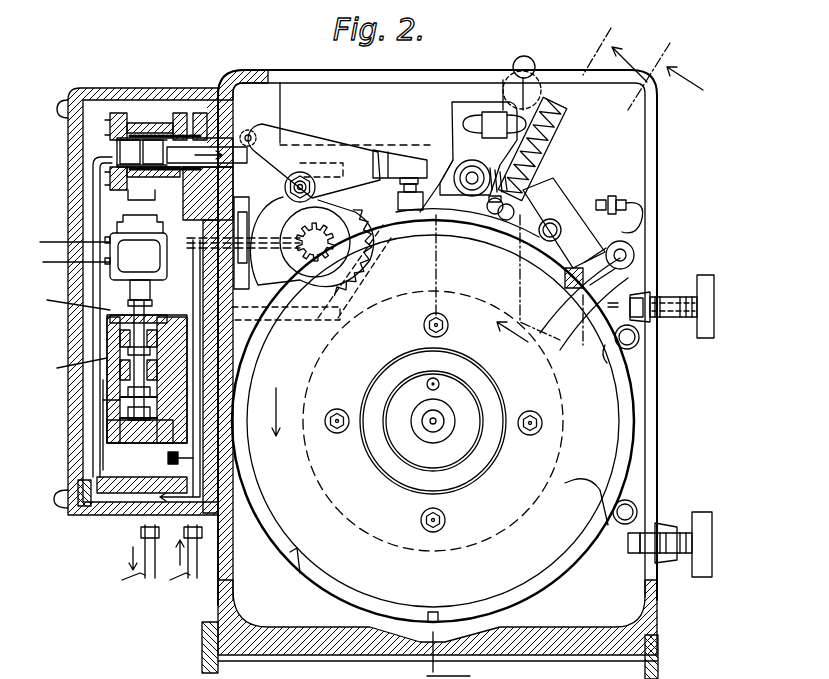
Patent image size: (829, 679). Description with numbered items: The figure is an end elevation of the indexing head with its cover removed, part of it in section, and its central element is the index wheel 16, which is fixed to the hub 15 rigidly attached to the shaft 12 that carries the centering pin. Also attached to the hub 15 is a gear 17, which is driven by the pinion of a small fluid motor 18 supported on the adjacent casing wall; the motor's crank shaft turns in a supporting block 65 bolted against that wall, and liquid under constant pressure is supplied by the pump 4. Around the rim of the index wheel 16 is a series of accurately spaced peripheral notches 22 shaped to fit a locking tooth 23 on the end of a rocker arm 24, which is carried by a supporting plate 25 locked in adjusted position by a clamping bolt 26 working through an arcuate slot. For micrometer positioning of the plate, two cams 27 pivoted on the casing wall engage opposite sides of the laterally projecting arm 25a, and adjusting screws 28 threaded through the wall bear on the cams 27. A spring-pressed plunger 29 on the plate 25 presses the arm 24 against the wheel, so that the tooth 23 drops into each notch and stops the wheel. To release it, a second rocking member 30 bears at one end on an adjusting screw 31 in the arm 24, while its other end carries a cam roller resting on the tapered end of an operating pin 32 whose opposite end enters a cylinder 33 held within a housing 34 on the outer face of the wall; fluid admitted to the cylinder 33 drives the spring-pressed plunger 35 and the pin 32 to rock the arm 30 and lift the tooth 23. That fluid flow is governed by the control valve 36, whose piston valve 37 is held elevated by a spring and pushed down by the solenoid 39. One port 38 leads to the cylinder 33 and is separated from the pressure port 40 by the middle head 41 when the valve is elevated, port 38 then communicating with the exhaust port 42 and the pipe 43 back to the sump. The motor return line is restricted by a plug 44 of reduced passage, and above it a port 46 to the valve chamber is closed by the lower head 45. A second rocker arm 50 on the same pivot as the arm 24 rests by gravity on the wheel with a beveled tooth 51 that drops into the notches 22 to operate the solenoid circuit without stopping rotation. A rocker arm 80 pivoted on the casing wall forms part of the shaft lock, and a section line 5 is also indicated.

The pump 4 is at (572, 192).
The section line 5- 5 is at (665, 76).
The shaft 12 is at (455, 419).
The hub 15 is at (405, 357).
The indexing wheel 16 is at (263, 343).
The gear 17 is at (367, 230).
The fluid motor 18 is at (280, 300).
The peripheral notches 22 is at (432, 240).
The locking tooth 23 is at (572, 282).
The rocker arm 24 is at (517, 240).
The supporting plate 25 is at (452, 110).
The laterally projecting arm 25a is at (607, 363).
The clamping bolt 26 is at (520, 60).
The cams 27 is at (633, 290).
The adjusting screws 28 is at (713, 290).
The spring-pressed plunger 29 is at (553, 163).
The rocking member 30 is at (327, 147).
The adjusting screw 31 is at (378, 152).
The operating pin 32 is at (190, 132).
The cylinder 33 is at (147, 130).
The housing 34 is at (110, 90).
The plunger 35 is at (136, 183).
The control valve 36 is at (107, 370).
The piston valve 37 is at (66, 300).
The port 38 is at (107, 385).
The solenoid 39 is at (133, 258).
The pressure port 40 is at (160, 282).
The middle head 41 is at (120, 397).
The exhaust port 42 is at (170, 398).
The pipe 43 is at (97, 440).
The plug 44 is at (168, 458).
The lower head 45 is at (120, 419).
The port 46 is at (175, 410).
The second rocker arm 50 is at (633, 256).
The tooth 51 is at (600, 338).
The supporting block 65 is at (247, 197).
The rocker arm 80 is at (640, 235).